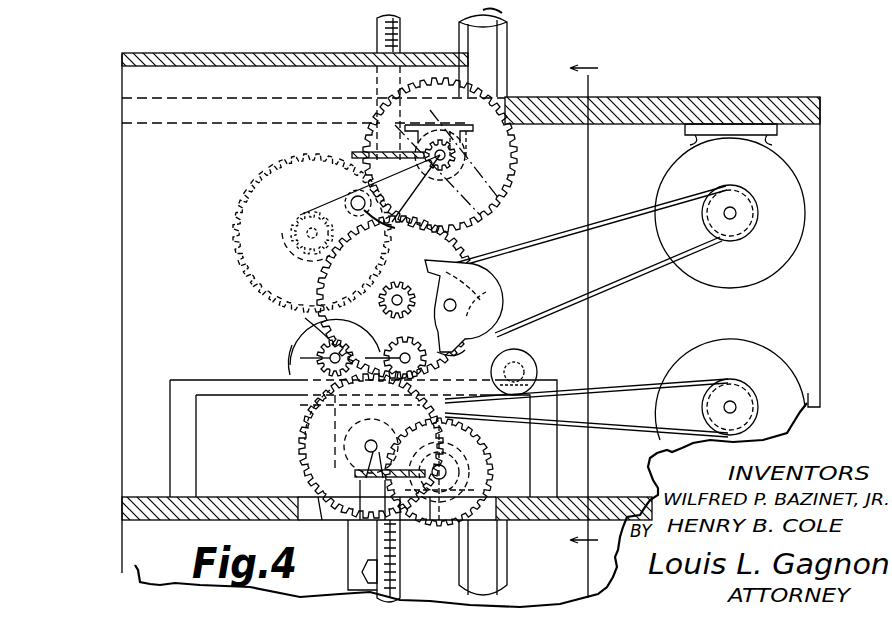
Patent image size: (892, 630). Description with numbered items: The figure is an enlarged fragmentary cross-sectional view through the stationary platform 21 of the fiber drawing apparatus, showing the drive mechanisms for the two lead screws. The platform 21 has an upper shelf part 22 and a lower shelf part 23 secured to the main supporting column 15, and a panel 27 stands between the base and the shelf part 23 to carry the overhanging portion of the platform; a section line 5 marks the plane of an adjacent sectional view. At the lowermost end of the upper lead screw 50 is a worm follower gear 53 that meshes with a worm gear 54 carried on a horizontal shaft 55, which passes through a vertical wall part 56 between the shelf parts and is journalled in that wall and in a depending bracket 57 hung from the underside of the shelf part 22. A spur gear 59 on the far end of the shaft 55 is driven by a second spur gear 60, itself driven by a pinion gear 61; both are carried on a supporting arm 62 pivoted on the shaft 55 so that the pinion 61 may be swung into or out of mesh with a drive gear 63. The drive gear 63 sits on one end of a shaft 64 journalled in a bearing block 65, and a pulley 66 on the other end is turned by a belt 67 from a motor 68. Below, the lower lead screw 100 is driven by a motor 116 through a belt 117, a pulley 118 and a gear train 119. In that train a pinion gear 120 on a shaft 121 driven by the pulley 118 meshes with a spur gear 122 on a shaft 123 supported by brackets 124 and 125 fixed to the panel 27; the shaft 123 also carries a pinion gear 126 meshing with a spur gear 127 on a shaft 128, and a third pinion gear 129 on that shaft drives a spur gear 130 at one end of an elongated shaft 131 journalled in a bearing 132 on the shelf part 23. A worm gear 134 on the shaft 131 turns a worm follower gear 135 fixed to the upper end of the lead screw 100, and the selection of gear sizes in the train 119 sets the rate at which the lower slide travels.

The section line 5- 5 is at (594, 329).
The main supporting column 15 is at (508, 48).
The stationary platform 21 is at (836, 159).
The upper shelf part 22 is at (786, 103).
The lower shelf part 23 is at (172, 522).
The panel 27 is at (136, 576).
The lead screw 50 is at (376, 33).
The worm follower gear 53 is at (356, 152).
The worm gear 54 is at (461, 129).
The shaft 55 is at (456, 160).
The vertical wall part 56 is at (650, 137).
The depending bracket 57 is at (468, 143).
The spur gear 59 is at (514, 180).
The second spur gear 60 is at (240, 228).
The pinion gear 61 is at (292, 253).
The supporting arm 62 is at (360, 158).
The drive gear 63 is at (402, 290).
The shaft 64 is at (458, 298).
The bearing block 65 is at (510, 290).
The pulley 66 is at (500, 314).
The belt 67 is at (646, 278).
The motor 68 is at (795, 213).
The lead screw 100 is at (400, 574).
The motor 116 is at (802, 380).
The belt 117 is at (648, 385).
The pulley 118 is at (292, 345).
The gear train 119 is at (290, 410).
The pinion gear 120 is at (290, 368).
The shaft 121 is at (318, 360).
The spur gear 122 is at (305, 324).
The shaft 123 is at (394, 357).
The bracket 124 is at (300, 430).
The bracket 125 is at (362, 562).
The pinion gear 126 is at (452, 386).
The spur gear 127 is at (300, 462).
The shaft 128 is at (365, 445).
The third pinion gear 129 is at (362, 462).
The spur gear 130 is at (494, 482).
The elongated shaft 131 is at (446, 462).
The bearing 132 is at (485, 457).
The worm gear 134 is at (430, 526).
The worm follower gear 135 is at (324, 520).